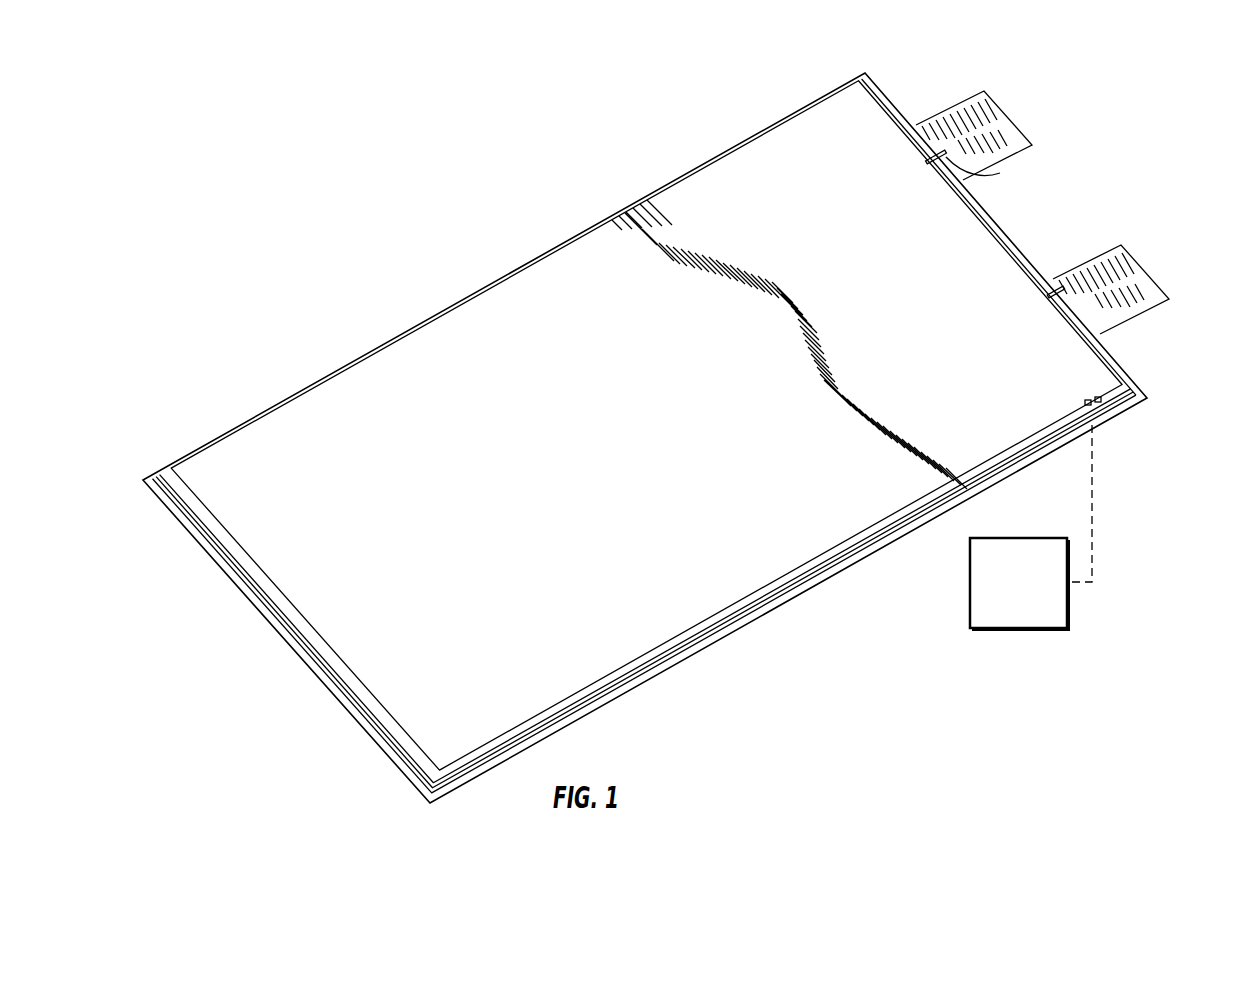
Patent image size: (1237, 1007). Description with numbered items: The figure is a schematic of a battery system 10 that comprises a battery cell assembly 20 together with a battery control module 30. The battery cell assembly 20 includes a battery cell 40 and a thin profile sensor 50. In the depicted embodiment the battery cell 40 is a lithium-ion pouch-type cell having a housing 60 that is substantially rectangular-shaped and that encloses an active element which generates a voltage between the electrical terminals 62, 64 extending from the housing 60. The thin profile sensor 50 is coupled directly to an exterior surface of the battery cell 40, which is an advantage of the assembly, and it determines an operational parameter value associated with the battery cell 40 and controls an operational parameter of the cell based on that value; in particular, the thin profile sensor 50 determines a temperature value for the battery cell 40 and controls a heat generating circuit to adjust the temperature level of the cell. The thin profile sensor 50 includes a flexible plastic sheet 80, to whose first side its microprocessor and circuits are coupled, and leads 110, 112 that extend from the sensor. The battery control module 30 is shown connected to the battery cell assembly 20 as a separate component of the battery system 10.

The battery system 10 is at (938, 78).
The battery cell assembly 20 is at (762, 126).
The battery control module 30 is at (1068, 606).
The battery cell 40 is at (658, 190).
The thin profile sensor 50 is at (585, 262).
The housing 60 is at (663, 670).
The electrical terminal 62 is at (1132, 272).
The electrical terminal 64 is at (998, 121).
The flexible plastic sheet 80 is at (520, 292).
The lead 110 is at (1058, 287).
The lead 112 is at (1000, 173).